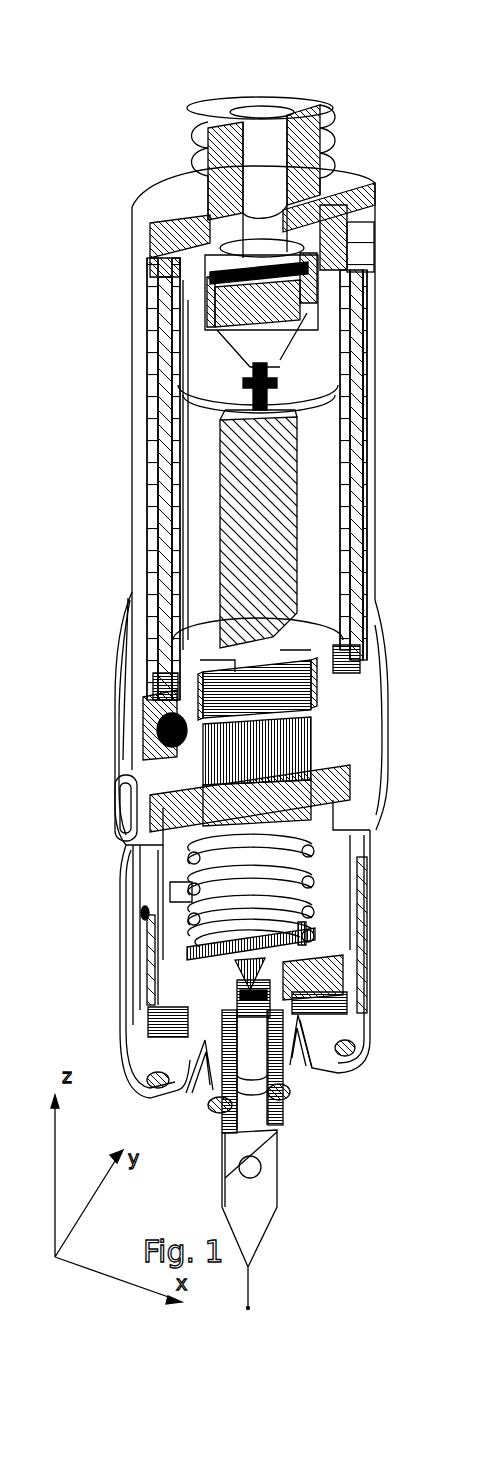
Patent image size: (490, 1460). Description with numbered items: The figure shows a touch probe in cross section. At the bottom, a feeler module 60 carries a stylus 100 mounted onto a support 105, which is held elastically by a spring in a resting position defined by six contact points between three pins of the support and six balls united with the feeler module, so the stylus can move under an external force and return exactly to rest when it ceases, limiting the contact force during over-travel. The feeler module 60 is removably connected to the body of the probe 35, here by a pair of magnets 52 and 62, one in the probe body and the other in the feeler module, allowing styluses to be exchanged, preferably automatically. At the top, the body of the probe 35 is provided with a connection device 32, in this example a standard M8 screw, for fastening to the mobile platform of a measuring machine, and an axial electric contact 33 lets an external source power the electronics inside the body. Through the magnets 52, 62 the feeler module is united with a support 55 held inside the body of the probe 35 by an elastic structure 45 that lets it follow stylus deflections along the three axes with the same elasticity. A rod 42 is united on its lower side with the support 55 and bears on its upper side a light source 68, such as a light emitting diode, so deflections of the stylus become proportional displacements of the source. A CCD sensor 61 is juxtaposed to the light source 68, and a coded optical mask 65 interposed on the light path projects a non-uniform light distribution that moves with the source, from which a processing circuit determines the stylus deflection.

The connection device 32 is at (308, 155).
The axial electric contact 33 is at (252, 127).
The body of the probe 35 is at (110, 288).
The CCD sensor 61 is at (300, 262).
The coded optical mask 65 is at (298, 312).
The light source 68 is at (258, 362).
The elastic structure 45 is at (347, 502).
The rod 42 is at (267, 582).
The support 55 is at (153, 713).
The magnet 52 is at (312, 670).
The magnet 62 is at (287, 756).
The feeler module 60 is at (377, 850).
The support 105 is at (285, 968).
The stylus 100 is at (258, 1242).